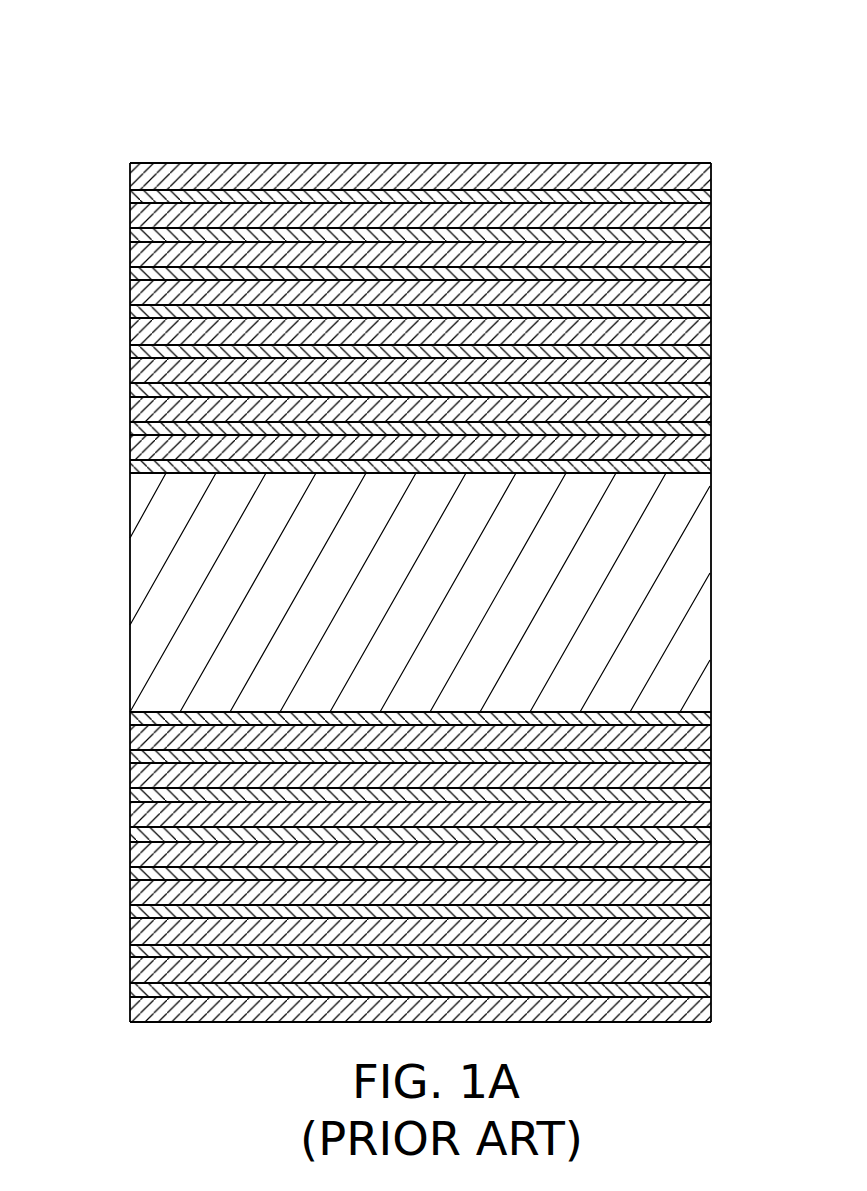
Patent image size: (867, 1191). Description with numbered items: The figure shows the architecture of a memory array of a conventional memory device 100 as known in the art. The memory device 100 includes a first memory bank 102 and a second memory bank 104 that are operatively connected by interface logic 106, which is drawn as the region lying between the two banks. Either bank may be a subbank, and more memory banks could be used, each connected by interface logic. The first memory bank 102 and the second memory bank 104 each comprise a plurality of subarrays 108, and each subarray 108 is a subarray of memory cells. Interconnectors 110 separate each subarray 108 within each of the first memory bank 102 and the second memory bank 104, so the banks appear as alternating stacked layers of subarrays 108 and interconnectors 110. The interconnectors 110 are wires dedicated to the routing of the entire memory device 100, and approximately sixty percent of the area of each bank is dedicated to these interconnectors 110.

The memory device 100 is at (403, 38).
The first memory bank 102 is at (721, 712).
The second memory bank 104 is at (721, 163).
The interface logic 106 is at (721, 473).
The subarray 108 is at (141, 176).
The interconnectors 110 is at (136, 196).